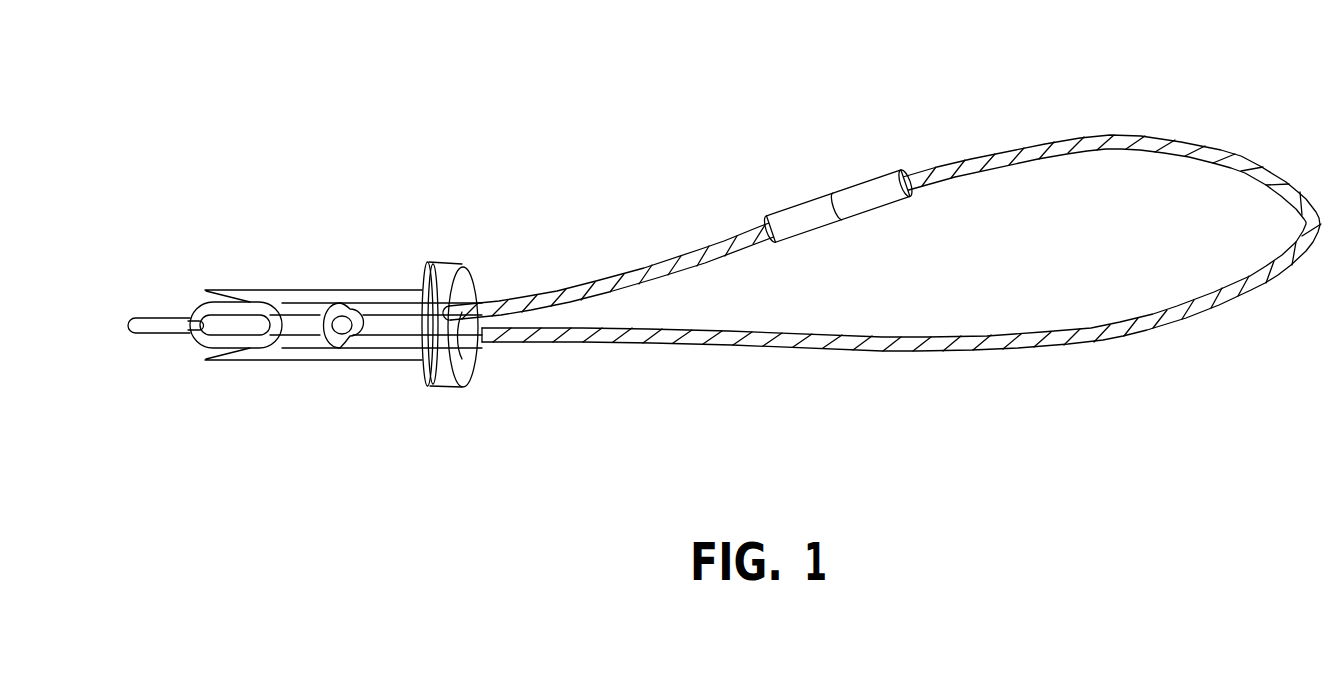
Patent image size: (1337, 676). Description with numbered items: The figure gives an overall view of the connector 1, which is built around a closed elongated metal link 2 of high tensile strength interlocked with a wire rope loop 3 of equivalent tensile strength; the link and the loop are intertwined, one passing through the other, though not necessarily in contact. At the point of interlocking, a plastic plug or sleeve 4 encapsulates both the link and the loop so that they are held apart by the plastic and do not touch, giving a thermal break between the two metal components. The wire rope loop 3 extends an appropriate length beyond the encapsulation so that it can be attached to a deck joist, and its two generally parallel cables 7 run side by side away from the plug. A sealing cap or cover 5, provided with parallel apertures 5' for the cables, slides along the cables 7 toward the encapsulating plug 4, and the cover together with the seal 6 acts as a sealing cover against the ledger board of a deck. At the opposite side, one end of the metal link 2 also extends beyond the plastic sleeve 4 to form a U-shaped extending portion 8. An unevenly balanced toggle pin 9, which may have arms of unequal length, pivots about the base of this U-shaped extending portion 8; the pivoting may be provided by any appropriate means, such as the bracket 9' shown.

The connector 1 is at (724, 260).
The closed elongated metal link 2 is at (237, 320).
The wire rope loop 3 is at (992, 154).
The plastic plug or sleeve 4 is at (368, 290).
The sealing cap or cover 5 is at (475, 279).
The parallel apertures 5' is at (503, 370).
The seal 6 is at (423, 262).
The generally parallel cables 7 is at (668, 328).
The U-shaped extending portion 8 is at (199, 312).
The toggle pin 9 is at (159, 380).
The bracket 9' is at (203, 381).